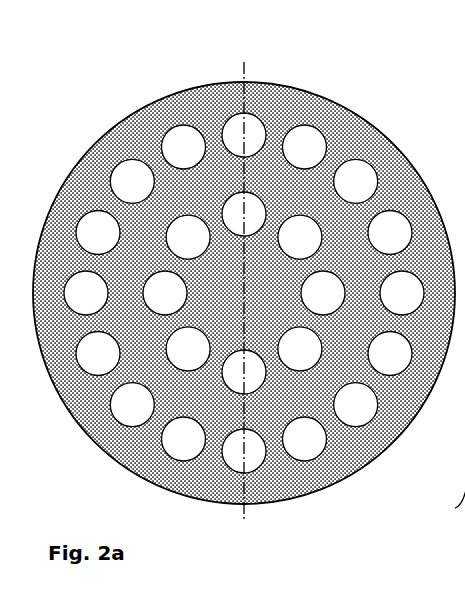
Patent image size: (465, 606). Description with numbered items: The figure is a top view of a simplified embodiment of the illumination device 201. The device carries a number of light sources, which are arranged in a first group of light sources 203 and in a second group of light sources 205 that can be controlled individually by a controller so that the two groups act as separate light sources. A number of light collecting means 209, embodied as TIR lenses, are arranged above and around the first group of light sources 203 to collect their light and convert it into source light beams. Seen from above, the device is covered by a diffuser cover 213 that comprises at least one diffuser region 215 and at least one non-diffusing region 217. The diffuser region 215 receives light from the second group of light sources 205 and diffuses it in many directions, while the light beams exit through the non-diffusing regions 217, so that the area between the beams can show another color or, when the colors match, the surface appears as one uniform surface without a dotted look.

The illumination device 201 is at (249, 281).
The first group of light sources 203 is at (455, 510).
The second group of light sources 205 is at (451, 228).
The light collecting means 209 is at (245, 215).
The diffuser cover 213 is at (333, 484).
The diffuser region 215 is at (166, 238).
The non-diffusing region 217 is at (230, 193).